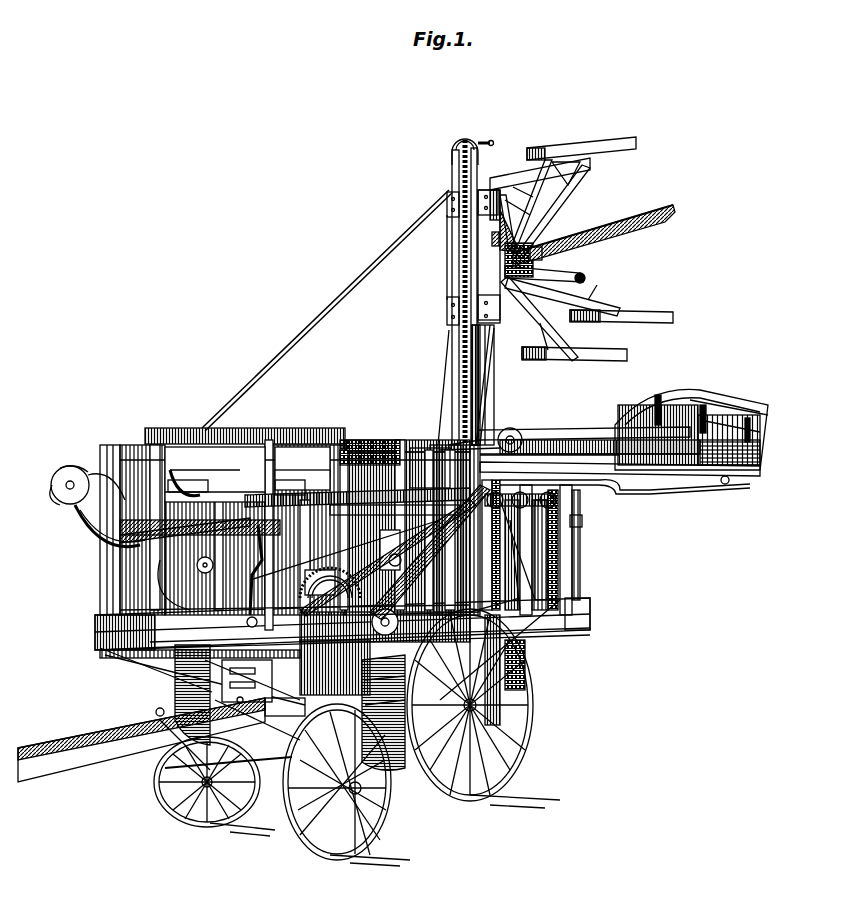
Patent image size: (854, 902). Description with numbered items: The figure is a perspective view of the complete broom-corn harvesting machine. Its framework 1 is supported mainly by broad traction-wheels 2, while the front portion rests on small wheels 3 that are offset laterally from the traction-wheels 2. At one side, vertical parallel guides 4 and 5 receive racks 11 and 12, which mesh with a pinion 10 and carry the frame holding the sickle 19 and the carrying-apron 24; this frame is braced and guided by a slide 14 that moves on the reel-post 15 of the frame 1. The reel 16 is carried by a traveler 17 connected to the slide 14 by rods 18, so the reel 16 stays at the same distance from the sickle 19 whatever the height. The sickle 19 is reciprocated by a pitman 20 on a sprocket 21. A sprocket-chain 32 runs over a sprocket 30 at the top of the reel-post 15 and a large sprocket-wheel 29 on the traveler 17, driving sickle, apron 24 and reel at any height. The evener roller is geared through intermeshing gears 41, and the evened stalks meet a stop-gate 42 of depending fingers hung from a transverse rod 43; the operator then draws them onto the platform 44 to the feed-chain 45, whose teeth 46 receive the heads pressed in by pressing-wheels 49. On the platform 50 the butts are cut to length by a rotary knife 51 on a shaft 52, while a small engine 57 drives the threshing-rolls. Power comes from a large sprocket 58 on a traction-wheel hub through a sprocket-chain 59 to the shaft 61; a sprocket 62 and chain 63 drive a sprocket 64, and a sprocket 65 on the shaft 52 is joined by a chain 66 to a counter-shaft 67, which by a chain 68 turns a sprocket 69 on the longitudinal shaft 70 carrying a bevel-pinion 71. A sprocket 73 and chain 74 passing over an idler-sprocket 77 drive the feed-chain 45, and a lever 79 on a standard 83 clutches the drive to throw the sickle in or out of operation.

The framework 1 is at (100, 595).
The traction-wheels 2 is at (178, 672).
The small wheels 3 is at (155, 787).
The guide 4 is at (517, 550).
The guide 5 is at (556, 560).
The pinion 10 is at (560, 522).
The rack 11 is at (520, 682).
The rack 12 is at (565, 585).
The slide 14 is at (490, 432).
The reel-post 15 is at (492, 333).
The reel 16 is at (600, 230).
The traveler 17 is at (447, 310).
The rods 18 is at (487, 386).
The sickle 19 is at (618, 435).
The pitman 20 is at (524, 438).
The sprocket 21 is at (520, 432).
The carrying-apron 24 is at (676, 429).
The sprocket-wheel 29 is at (452, 265).
The sprocket 30 is at (478, 137).
The sprocket-chain 32 is at (458, 356).
The intermeshing gears 41 is at (395, 510).
The stop-gate 42 is at (302, 472).
The transverse rod 43 is at (360, 445).
The platform 44 is at (292, 485).
The feed-chain 45 is at (205, 468).
The teeth 46 is at (191, 468).
The pressing-wheels 49 is at (302, 455).
The platform 50 is at (195, 485).
The rotary knife 51 is at (175, 447).
The shaft 52 is at (41, 498).
The engine 57 is at (385, 680).
The sprocket 58 is at (430, 785).
The sprocket-chain 59 is at (385, 705).
The shaft 61 is at (392, 626).
The sprocket 62 is at (330, 610).
The chain 63 is at (420, 627).
The sprocket 64 is at (200, 534).
The sprocket 65 is at (60, 475).
The chain 66 is at (85, 530).
The counter-shaft 67 is at (185, 583).
The chain 68 is at (345, 550).
The sprocket 69 is at (495, 618).
The shaft 70 is at (395, 552).
The bevel-pinion 71 is at (308, 606).
The sprocket 73 is at (78, 520).
The chain 74 is at (342, 651).
The idler-sprocket 77 is at (357, 504).
The lever 79 is at (275, 440).
The standard 83 is at (255, 584).